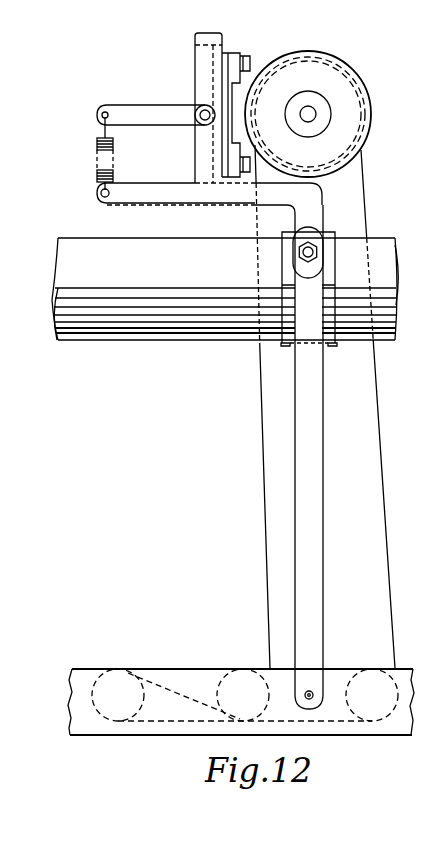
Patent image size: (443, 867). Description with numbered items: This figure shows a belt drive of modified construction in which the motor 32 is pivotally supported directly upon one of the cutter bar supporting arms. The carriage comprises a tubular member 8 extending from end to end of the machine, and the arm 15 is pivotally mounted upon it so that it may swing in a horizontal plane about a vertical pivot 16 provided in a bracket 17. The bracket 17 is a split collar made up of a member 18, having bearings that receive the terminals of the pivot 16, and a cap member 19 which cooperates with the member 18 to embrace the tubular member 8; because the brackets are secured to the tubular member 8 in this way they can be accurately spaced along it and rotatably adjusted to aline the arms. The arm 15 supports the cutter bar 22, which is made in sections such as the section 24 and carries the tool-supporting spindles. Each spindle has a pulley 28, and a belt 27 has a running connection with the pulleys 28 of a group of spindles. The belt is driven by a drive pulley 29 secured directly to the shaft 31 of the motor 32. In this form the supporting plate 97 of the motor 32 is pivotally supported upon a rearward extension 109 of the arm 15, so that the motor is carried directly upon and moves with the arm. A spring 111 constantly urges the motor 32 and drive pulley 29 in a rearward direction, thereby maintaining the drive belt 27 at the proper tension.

The tubular member 8 is at (383, 245).
The arm 15 is at (323, 527).
The vertical pivot 16 is at (314, 250).
The bracket 17 is at (279, 238).
The member 18 is at (331, 236).
The cap member 19 is at (289, 344).
The cutter bar 22 is at (121, 737).
The cutter bar section 24 is at (168, 670).
The belt 27 is at (265, 528).
The pulley 28 is at (128, 672).
The drive pulley 29 is at (360, 83).
The motor shaft 31 is at (306, 105).
The motor 32 is at (333, 67).
The supporting plate 97 is at (218, 70).
The rearward extension 109 is at (197, 36).
The spring 111 is at (97, 142).